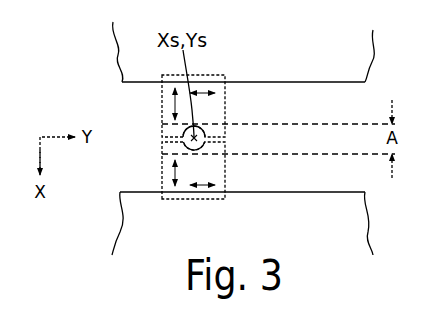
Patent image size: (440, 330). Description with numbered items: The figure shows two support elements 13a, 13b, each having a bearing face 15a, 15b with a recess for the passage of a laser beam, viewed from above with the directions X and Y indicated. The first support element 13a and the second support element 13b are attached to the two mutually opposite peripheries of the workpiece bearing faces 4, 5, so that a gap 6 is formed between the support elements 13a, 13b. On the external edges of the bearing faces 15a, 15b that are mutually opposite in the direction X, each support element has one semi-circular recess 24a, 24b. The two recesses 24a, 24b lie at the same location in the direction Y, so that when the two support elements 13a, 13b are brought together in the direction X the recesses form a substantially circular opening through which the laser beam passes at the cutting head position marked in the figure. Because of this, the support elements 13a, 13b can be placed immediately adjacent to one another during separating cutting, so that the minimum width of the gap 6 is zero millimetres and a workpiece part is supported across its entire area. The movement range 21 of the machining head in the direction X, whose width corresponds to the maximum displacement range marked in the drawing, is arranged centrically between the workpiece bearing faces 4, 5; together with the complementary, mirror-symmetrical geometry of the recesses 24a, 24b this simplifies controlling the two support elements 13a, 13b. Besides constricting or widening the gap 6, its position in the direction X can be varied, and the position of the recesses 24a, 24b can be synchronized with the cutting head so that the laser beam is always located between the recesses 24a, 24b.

The workpiece bearing face 4 is at (146, 35).
The workpiece bearing face 5 is at (146, 243).
The gap 6 is at (176, 130).
The movement range 21 is at (318, 137).
The first support element 13a is at (155, 108).
The second support element 13b is at (155, 170).
The bearing face 15a is at (225, 108).
The bearing face 15b is at (225, 172).
The semi-circular recess 24a is at (198, 133).
The semi-circular recess 24b is at (198, 152).